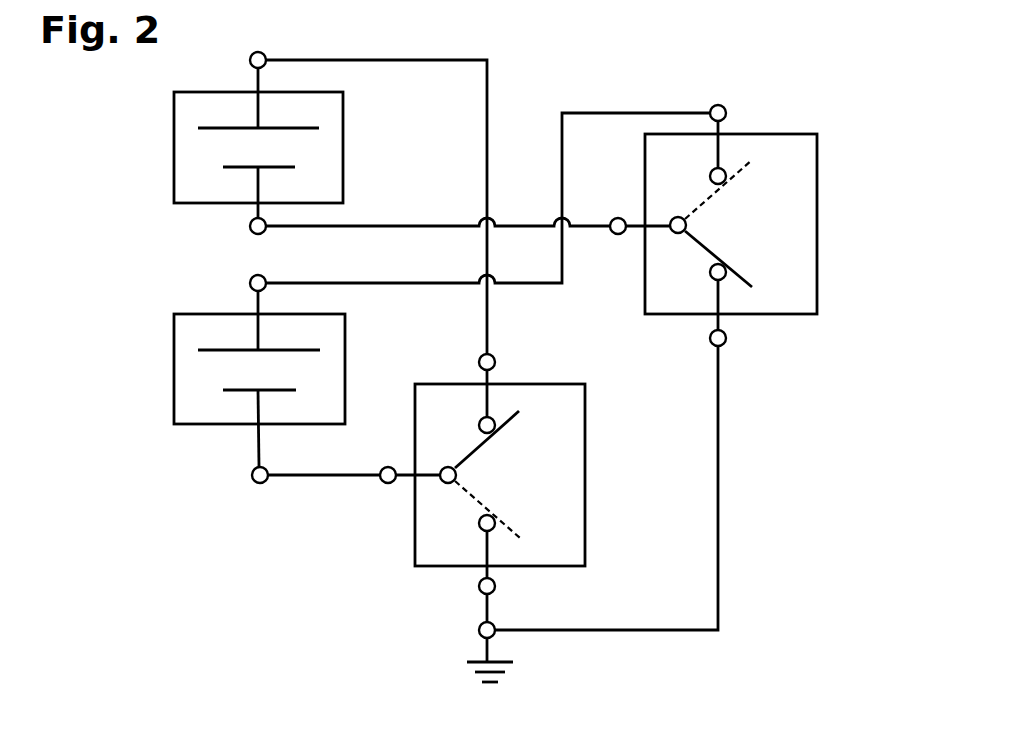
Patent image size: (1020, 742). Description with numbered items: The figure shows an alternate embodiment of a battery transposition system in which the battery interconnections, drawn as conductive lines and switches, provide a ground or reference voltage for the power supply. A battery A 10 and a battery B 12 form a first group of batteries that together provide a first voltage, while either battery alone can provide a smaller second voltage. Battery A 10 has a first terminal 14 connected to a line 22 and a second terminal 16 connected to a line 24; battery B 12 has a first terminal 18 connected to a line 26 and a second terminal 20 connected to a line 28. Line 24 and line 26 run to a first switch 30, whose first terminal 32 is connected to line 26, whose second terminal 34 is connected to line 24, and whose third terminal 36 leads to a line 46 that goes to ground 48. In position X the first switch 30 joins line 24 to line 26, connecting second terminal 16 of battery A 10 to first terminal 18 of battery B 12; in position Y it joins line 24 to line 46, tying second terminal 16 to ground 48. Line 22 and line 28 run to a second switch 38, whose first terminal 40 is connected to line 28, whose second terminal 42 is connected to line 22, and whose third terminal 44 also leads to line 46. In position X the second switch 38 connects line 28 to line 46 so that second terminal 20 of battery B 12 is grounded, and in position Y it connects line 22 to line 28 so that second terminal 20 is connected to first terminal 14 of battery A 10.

The battery A 10 is at (344, 120).
The battery B 12 is at (346, 345).
The first terminal of battery A 14 is at (250, 63).
The second terminal of battery A 16 is at (250, 230).
The first terminal of battery B 18 is at (250, 286).
The second terminal of battery B 20 is at (252, 481).
The line 22 is at (411, 59).
The line 24 is at (403, 224).
The line 26 is at (390, 281).
The line 28 is at (334, 480).
The first switch 30 is at (819, 195).
The first terminal of first switch 32 is at (721, 104).
The second terminal of first switch 34 is at (616, 237).
The third terminal of first switch 36 is at (727, 340).
The second switch 38 is at (587, 462).
The first terminal of second switch 40 is at (385, 485).
The second terminal of second switch 42 is at (498, 360).
The third terminal of second switch 44 is at (480, 589).
The line 46 is at (721, 418).
The ground 48 is at (480, 634).